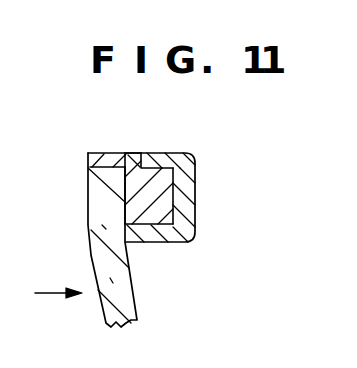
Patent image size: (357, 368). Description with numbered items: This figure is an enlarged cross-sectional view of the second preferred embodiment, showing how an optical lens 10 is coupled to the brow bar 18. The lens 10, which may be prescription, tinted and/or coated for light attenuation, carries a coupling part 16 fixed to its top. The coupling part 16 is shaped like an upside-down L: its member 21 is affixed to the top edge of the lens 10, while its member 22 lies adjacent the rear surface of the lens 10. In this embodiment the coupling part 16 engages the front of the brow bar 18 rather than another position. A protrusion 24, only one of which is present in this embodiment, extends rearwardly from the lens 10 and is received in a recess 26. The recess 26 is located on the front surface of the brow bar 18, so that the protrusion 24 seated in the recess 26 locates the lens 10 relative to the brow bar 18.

The optical lens 10 is at (92, 257).
The coupling part 16 is at (108, 138).
The brow bar 18 is at (198, 163).
The member 21 is at (143, 153).
The member 22 is at (143, 197).
The protrusion 24 is at (163, 218).
The recess 26 is at (175, 200).